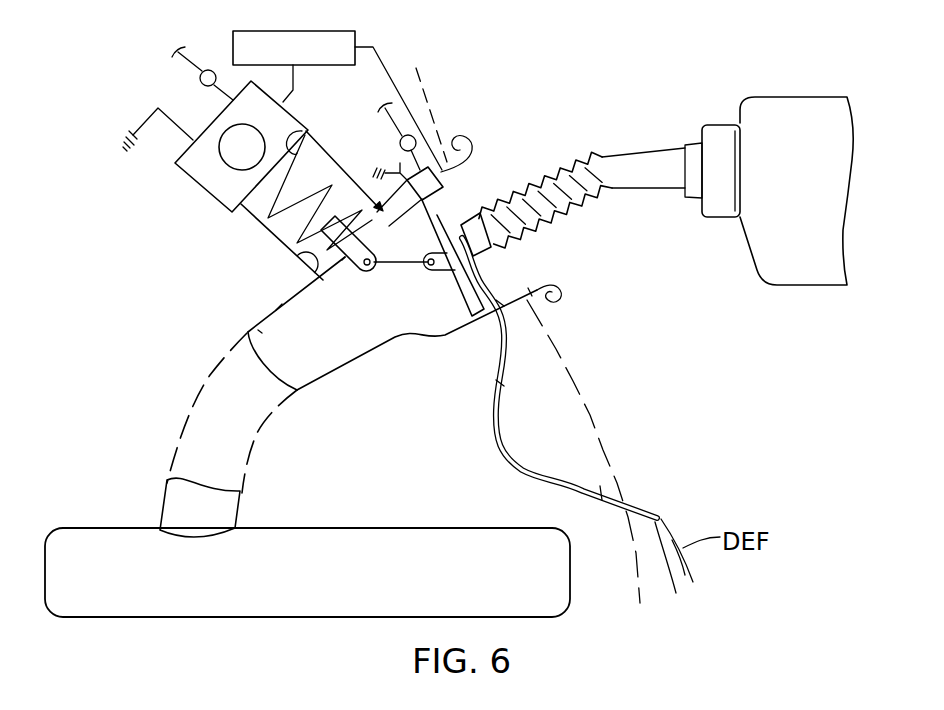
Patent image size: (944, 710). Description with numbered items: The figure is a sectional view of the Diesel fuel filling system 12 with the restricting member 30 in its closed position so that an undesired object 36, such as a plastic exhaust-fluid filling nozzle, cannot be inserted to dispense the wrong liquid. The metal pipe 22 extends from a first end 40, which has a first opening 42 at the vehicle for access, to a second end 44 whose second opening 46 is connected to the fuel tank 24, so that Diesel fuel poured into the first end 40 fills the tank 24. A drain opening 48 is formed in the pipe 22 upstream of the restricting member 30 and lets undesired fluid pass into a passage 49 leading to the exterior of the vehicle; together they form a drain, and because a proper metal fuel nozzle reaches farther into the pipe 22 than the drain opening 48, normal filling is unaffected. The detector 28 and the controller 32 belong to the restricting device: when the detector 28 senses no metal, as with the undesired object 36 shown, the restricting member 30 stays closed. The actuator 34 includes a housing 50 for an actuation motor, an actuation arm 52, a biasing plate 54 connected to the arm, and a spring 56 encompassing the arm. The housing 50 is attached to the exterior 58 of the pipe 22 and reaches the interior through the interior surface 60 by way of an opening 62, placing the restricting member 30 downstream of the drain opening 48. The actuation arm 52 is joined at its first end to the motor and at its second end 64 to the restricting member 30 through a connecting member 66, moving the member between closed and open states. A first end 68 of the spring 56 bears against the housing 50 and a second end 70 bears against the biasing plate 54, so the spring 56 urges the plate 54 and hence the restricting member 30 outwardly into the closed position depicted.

The filling system 12 is at (582, 117).
The pipe 22 is at (317, 374).
The fuel tank 24 is at (432, 585).
The detector 28 is at (447, 202).
The restricting member 30 is at (458, 282).
The controller 32 is at (254, 31).
The actuator 34 is at (195, 182).
The undesired object 36 is at (590, 205).
The first end 40 is at (560, 292).
The first opening 42 is at (528, 288).
The second end 44 is at (242, 508).
The second opening 46 is at (238, 530).
The drain opening 48 is at (496, 337).
The passage 49 is at (492, 405).
The housing 50 is at (288, 110).
The actuation arm 52 is at (273, 234).
The biasing plate 54 is at (342, 269).
The spring 56 is at (315, 185).
The exterior 58 is at (279, 306).
The interior surface 60 is at (258, 330).
The opening 62 is at (301, 261).
The second end 64 is at (367, 268).
The connecting member 66 is at (403, 265).
The first end 68 is at (304, 125).
The second end 70 is at (365, 231).